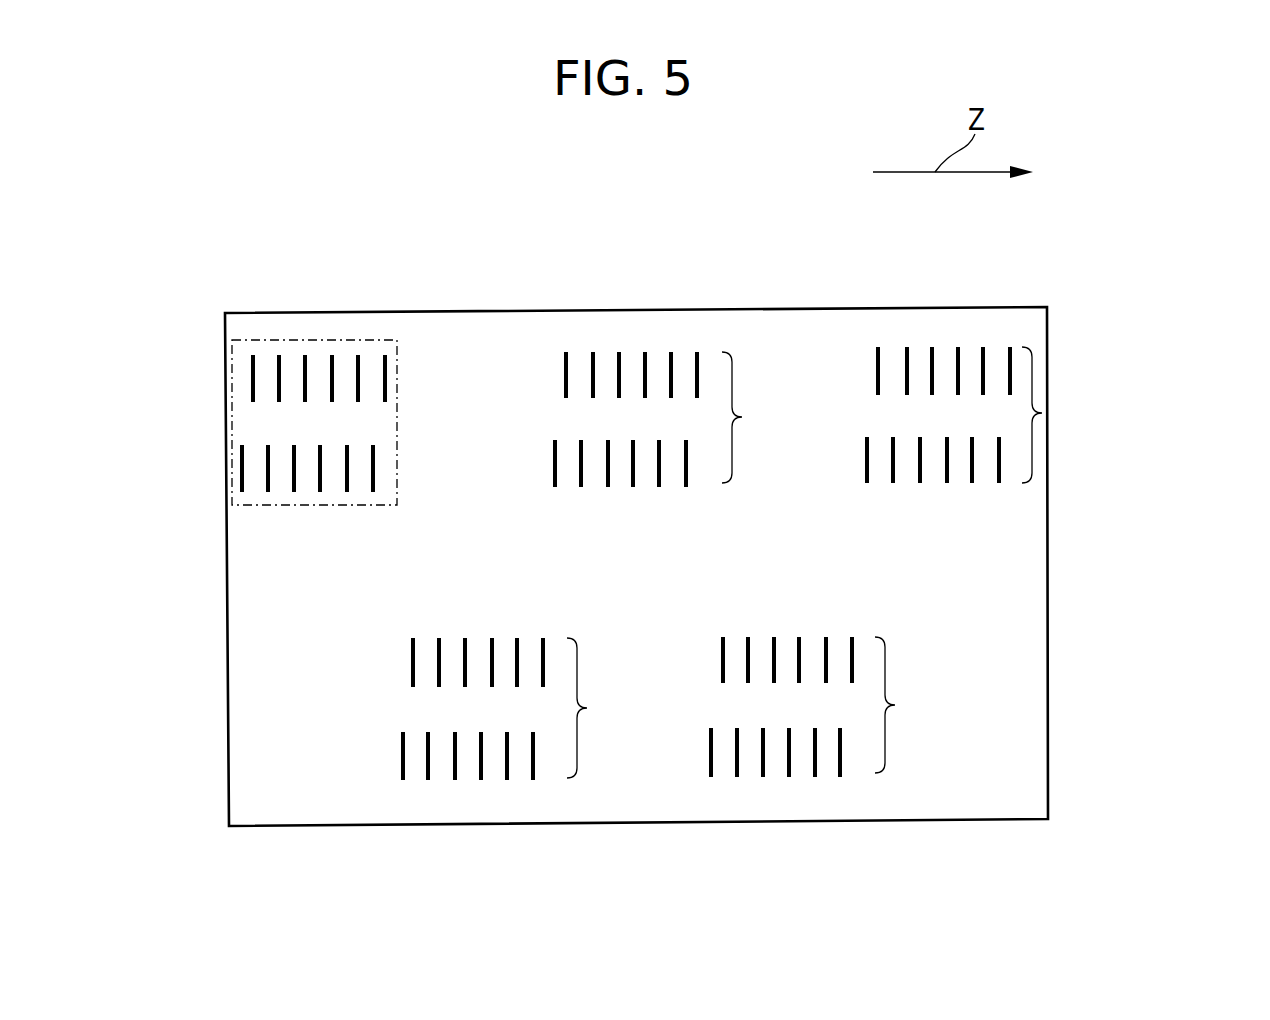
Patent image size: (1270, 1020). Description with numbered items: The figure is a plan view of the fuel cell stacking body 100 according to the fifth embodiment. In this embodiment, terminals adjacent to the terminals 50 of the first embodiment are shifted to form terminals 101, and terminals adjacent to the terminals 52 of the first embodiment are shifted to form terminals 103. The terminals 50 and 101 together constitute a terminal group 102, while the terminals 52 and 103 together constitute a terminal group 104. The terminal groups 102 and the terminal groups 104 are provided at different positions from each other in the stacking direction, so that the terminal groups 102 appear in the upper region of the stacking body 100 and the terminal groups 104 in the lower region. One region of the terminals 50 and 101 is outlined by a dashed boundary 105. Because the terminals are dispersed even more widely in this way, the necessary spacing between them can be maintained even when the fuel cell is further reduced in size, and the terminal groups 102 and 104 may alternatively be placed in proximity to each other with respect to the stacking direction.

The fuel cell stacking body 100 is at (1125, 508).
The terminals 50 is at (333, 372).
The terminals 52 is at (403, 768).
The terminals 101 is at (296, 470).
The terminal group 102 is at (1075, 411).
The terminals 103 is at (412, 656).
The terminal group 104 is at (754, 707).
The unit cell region 105 is at (378, 340).